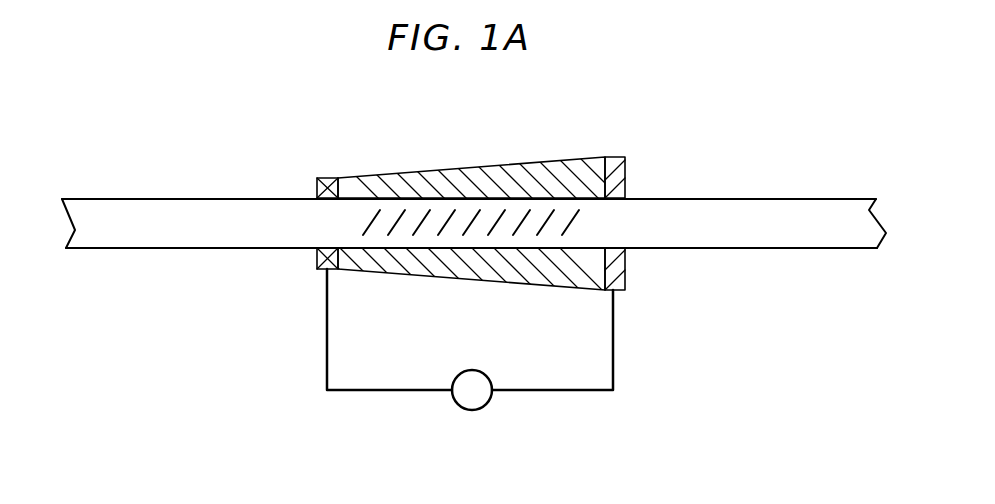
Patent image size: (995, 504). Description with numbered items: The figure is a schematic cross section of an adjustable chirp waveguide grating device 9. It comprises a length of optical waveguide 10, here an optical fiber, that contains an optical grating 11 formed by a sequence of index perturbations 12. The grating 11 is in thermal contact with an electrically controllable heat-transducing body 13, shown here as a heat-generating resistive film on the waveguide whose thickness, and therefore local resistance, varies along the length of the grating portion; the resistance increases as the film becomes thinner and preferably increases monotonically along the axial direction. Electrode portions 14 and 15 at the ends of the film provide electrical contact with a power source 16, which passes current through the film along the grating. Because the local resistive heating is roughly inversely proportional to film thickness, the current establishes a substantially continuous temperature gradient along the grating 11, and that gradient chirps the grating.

The adjustable chirp waveguide grating device 9 is at (754, 140).
The optical waveguide 10 is at (160, 198).
The optical grating 11 is at (337, 297).
The index perturbations 12 is at (573, 221).
The heat-transducing body 13 is at (440, 168).
The electrode portion 14 is at (314, 261).
The electrode portion 15 is at (616, 157).
The power source 16 is at (487, 404).